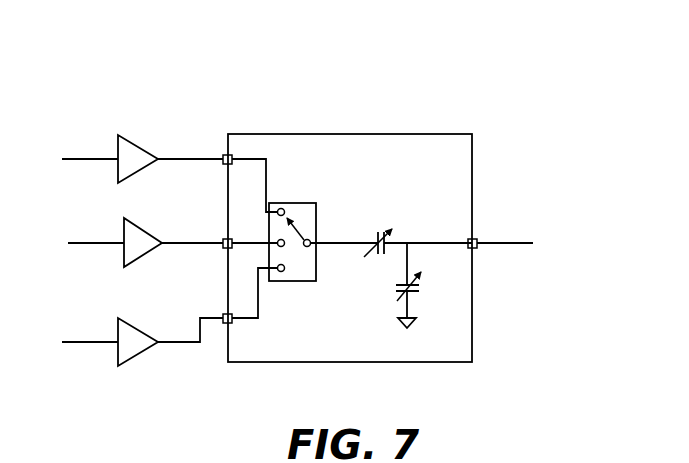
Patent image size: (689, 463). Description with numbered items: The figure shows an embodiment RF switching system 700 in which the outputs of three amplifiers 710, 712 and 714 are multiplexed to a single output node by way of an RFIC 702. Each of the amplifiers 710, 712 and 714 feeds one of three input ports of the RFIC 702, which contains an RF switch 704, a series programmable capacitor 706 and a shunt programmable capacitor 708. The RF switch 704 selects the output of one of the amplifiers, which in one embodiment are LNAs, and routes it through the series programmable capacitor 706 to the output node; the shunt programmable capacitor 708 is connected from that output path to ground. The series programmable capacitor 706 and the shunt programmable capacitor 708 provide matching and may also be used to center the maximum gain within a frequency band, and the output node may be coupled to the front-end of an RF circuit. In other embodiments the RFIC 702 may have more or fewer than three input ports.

The RF switching system 700 is at (125, 62).
The RFIC 702 is at (291, 134).
The RF switch 704 is at (298, 203).
The series programmable capacitor 706 is at (377, 236).
The shunt programmable capacitor 708 is at (396, 291).
The amplifier 710 is at (138, 148).
The amplifier 712 is at (143, 231).
The amplifier 714 is at (134, 331).